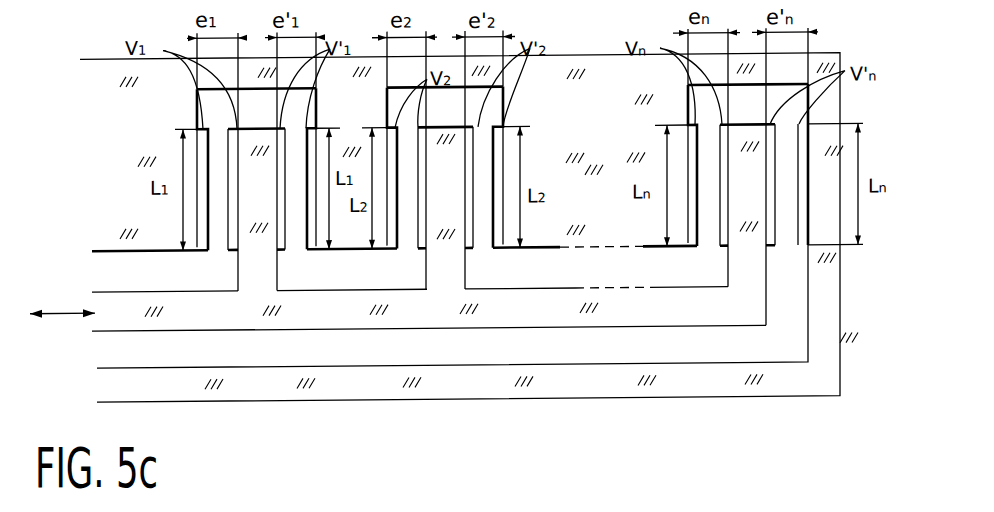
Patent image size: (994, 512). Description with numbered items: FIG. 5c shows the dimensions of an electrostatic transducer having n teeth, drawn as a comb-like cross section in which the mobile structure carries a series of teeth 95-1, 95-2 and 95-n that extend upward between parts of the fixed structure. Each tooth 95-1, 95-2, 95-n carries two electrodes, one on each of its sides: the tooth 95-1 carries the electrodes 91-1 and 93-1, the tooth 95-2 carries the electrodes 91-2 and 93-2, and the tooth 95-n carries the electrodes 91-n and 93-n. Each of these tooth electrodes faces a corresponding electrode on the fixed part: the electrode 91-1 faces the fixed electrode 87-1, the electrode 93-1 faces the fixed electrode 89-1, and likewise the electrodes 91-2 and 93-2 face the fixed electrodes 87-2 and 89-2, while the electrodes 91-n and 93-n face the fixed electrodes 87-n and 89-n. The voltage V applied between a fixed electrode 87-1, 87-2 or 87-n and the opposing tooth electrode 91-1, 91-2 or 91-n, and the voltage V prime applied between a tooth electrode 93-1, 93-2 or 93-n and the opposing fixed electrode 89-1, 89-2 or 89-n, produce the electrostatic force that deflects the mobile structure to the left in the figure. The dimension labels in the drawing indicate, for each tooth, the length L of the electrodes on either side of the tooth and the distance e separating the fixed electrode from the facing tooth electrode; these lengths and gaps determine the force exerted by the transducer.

The fixed-part electrode 87-1 is at (199, 140).
The fixed-part electrode 87-2 is at (386, 138).
The fixed-part electrode 87-n is at (690, 140).
The fixed-part electrode 89-1 is at (314, 252).
The fixed-part electrode 89-2 is at (506, 138).
The fixed-part electrode 89-n is at (812, 256).
The tooth electrode 91-1 is at (231, 254).
The tooth electrode 91-2 is at (421, 254).
The tooth electrode 91-n is at (722, 255).
The tooth electrode 93-1 is at (284, 264).
The tooth electrode 93-2 is at (471, 257).
The tooth electrode 93-n is at (757, 259).
The tooth 95-1 is at (259, 270).
The tooth 95-2 is at (453, 268).
The tooth 95-n is at (760, 268).